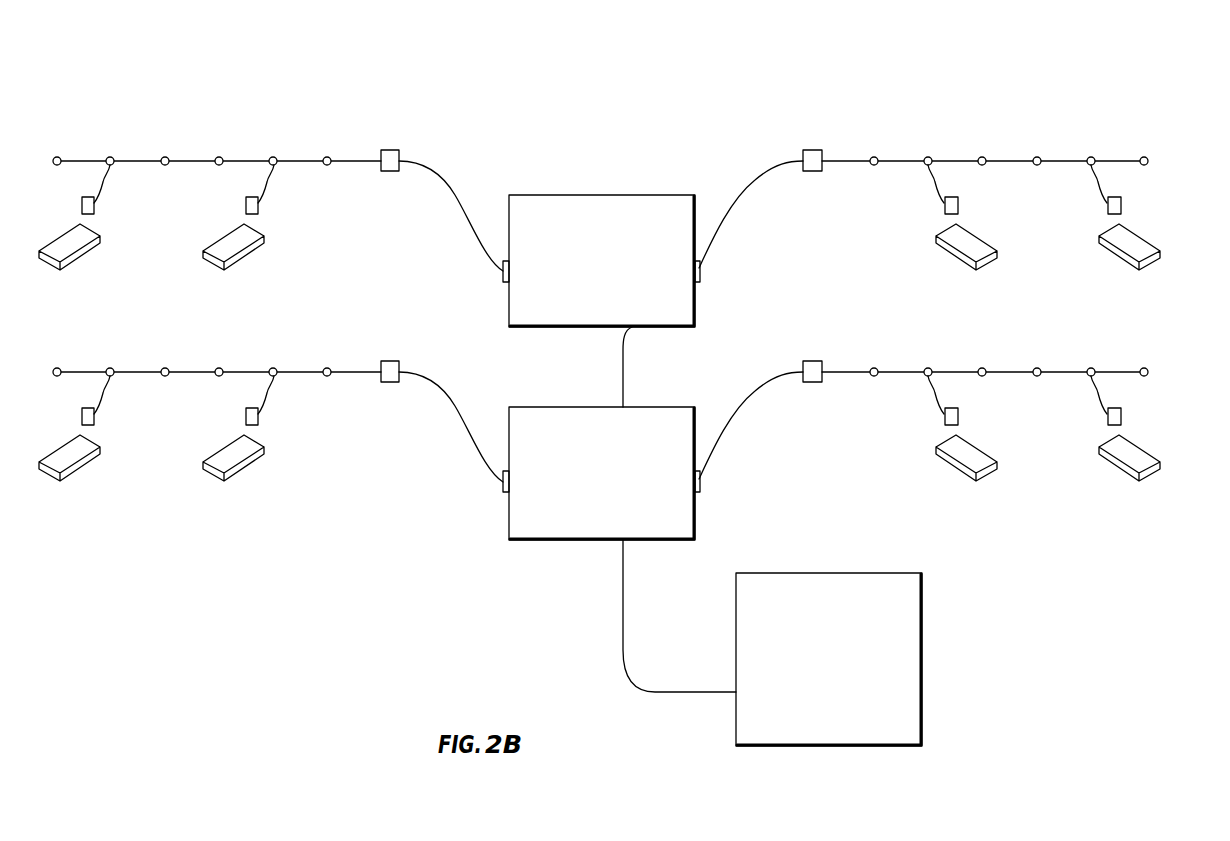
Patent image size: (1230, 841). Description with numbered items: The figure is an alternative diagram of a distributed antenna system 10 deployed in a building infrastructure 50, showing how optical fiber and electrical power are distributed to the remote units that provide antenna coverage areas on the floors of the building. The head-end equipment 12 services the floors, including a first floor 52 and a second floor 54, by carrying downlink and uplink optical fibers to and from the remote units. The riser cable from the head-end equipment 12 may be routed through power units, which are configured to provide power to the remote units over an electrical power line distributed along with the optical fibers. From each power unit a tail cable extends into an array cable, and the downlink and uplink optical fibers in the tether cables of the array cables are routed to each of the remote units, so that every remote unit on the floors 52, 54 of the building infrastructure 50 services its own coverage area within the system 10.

The distributed antenna system 10 is at (607, 105).
The head-end equipment 12 is at (922, 640).
The building infrastructure 50 is at (890, 57).
The first floor 52 is at (1160, 320).
The second floor 54 is at (1128, 105).